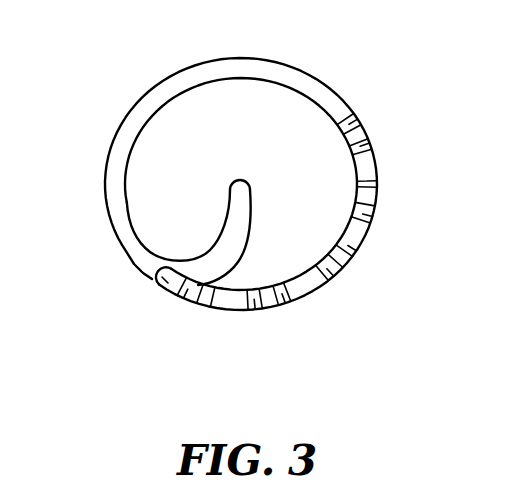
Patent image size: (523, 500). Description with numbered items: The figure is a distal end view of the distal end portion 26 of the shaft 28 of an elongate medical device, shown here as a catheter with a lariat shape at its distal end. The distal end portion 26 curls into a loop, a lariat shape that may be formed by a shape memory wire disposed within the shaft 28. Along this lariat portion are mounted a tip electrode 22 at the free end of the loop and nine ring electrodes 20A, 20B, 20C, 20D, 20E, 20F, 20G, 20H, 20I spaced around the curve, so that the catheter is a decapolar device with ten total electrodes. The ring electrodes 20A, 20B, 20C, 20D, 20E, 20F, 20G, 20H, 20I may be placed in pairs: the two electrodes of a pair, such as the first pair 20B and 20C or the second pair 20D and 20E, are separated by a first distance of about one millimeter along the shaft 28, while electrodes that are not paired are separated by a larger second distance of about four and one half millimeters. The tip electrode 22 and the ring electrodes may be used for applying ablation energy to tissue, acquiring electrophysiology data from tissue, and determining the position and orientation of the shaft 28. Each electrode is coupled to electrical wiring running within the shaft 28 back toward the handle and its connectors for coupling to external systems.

The distal end portion 26 is at (147, 73).
The shaft 28 is at (137, 262).
The tip electrode 22 is at (157, 284).
The ring electrode 20A is at (200, 303).
The ring electrode 20B is at (253, 312).
The ring electrode 20C is at (290, 308).
The ring electrode 20D is at (331, 284).
The ring electrode 20E is at (351, 262).
The ring electrode 20F is at (373, 225).
The ring electrode 20G is at (378, 184).
The ring electrode 20H is at (368, 140).
The ring electrode 20I is at (352, 114).